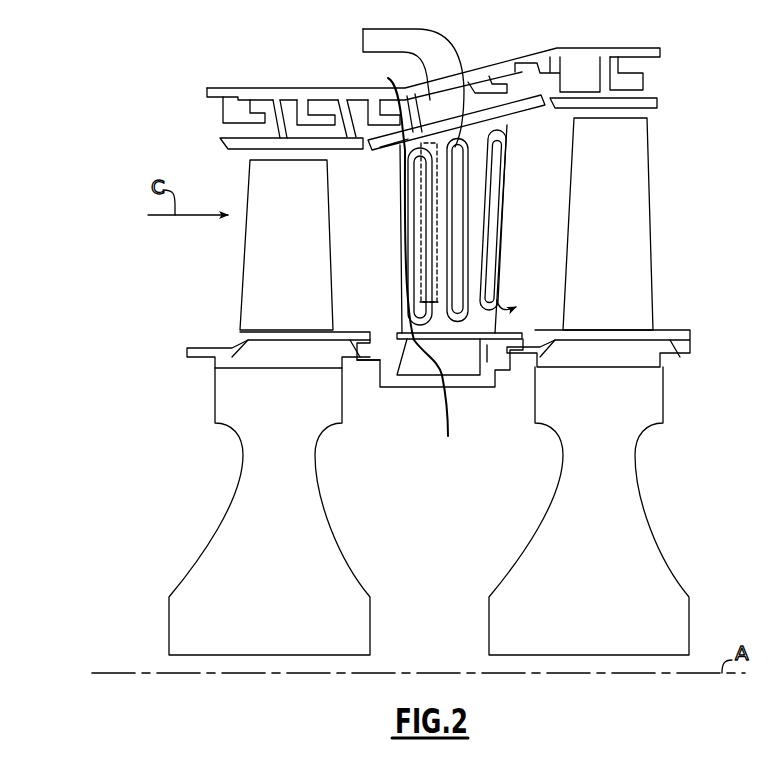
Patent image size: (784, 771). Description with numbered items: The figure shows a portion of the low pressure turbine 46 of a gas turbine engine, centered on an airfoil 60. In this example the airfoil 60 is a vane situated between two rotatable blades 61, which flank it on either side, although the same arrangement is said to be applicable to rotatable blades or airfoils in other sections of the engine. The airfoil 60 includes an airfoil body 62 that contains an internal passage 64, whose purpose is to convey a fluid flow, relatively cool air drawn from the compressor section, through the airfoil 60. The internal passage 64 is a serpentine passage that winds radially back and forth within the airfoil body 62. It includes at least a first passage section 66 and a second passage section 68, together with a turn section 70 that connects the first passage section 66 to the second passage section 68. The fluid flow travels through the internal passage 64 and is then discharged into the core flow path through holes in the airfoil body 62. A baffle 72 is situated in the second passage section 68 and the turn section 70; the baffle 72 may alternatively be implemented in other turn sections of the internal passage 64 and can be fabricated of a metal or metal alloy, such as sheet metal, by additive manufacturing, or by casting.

The low pressure turbine 46 is at (104, 446).
The airfoil 60 is at (396, 232).
The rotatable blades 61 is at (244, 252).
The airfoil body 62 is at (512, 177).
The internal passage 64 is at (414, 273).
The first passage section 66 is at (407, 170).
The second passage section 68 is at (430, 190).
The turn section 70 is at (398, 83).
The baffle 72 is at (459, 66).